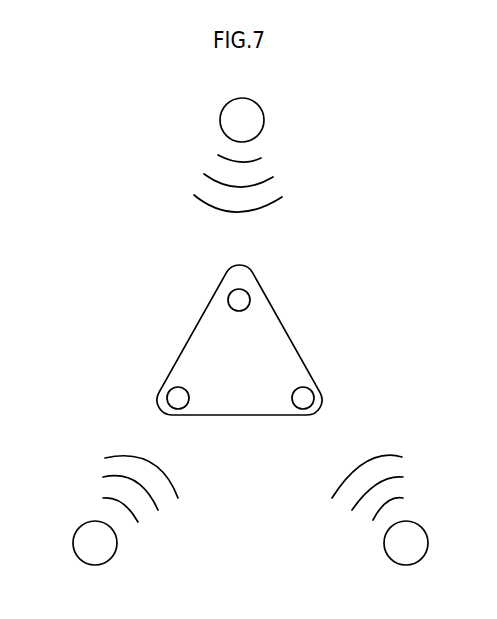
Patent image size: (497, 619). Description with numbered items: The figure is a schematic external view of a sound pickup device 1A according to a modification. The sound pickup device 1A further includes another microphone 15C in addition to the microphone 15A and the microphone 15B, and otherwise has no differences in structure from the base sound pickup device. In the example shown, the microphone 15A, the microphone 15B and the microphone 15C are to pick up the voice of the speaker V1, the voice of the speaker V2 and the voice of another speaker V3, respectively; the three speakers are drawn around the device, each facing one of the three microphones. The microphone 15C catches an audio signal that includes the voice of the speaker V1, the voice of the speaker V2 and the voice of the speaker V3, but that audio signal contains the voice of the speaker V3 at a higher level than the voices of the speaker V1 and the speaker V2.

The sound pickup device 1A is at (256, 286).
The microphone 15A is at (309, 388).
The microphone 15B is at (177, 388).
The microphone 15C is at (235, 288).
The speaker V1 is at (422, 525).
The speaker V2 is at (78, 530).
The speaker V3 is at (225, 110).